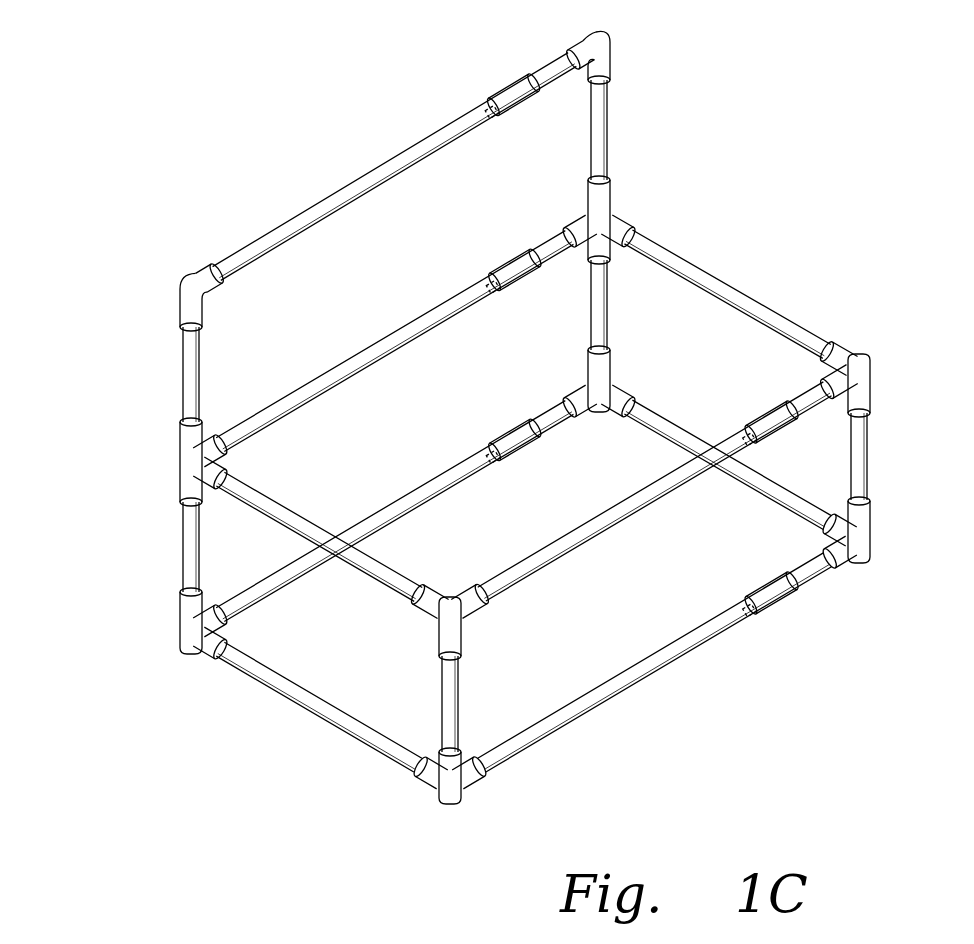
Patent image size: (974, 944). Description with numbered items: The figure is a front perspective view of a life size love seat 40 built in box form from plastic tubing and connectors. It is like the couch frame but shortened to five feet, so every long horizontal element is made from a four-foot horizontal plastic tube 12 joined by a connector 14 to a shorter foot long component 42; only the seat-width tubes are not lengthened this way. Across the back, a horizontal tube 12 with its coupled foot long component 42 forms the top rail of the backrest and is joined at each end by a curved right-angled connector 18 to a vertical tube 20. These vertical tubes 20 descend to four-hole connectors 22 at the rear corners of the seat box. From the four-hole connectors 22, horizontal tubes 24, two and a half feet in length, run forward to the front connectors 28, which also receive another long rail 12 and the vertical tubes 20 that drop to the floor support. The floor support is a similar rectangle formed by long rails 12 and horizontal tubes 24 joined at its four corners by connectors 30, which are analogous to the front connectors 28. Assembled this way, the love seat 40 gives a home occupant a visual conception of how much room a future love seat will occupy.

The horizontal plastic tubes 12 is at (344, 192).
The connectors 14 is at (492, 104).
The curved right-angled connectors 18 is at (601, 44).
The vertical tubes 20 is at (611, 130).
The four-hole connectors 22 is at (612, 214).
The horizontal tubes 24 is at (738, 291).
The front connectors 28 is at (872, 358).
The connectors 30 is at (612, 376).
The life size love seat 40 is at (848, 140).
The foot long components 42 is at (527, 88).